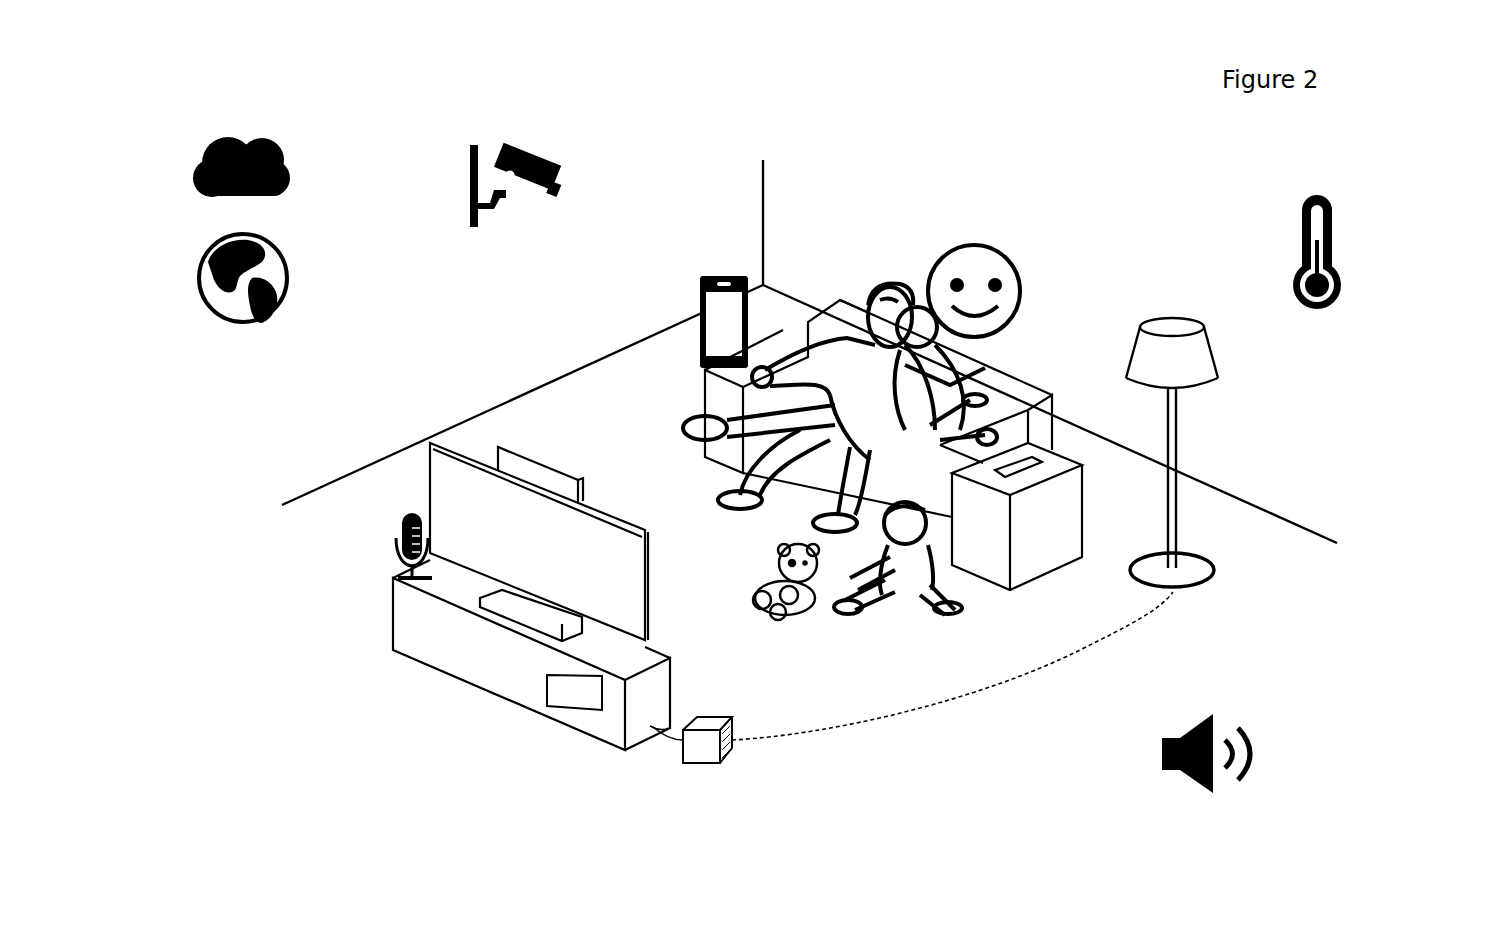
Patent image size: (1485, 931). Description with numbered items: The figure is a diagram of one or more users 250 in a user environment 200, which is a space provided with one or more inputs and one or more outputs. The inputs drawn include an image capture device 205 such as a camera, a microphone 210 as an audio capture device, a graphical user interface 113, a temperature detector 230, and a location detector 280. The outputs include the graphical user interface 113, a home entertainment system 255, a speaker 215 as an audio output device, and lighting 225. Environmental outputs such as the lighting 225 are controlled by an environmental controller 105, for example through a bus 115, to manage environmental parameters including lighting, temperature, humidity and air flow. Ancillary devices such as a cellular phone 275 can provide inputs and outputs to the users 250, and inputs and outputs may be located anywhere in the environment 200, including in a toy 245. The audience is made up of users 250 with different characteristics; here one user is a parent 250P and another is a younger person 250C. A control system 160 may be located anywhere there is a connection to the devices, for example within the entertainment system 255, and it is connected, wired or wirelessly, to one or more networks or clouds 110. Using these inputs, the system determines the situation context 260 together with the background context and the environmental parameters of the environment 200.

The user environment 200 is at (200, 89).
The networks/clouds 110 is at (280, 160).
The image capture device 205 is at (543, 165).
The location detector 280 is at (210, 280).
The cellular phone 275 is at (724, 272).
The situation context 260 is at (981, 268).
The temperature detector 230 is at (1335, 271).
The lighting 225 is at (1190, 365).
The bus 115 is at (876, 720).
The graphical user interface 113 is at (448, 472).
The microphone 210 is at (397, 533).
The home entertainment system 255 is at (495, 663).
The control system 160 is at (570, 697).
The environmental controller 105 is at (703, 748).
The speaker 215 is at (1162, 738).
The toy 245 is at (777, 585).
The users 250 is at (940, 474).
The parent 250P is at (918, 393).
The younger person 250C is at (908, 582).